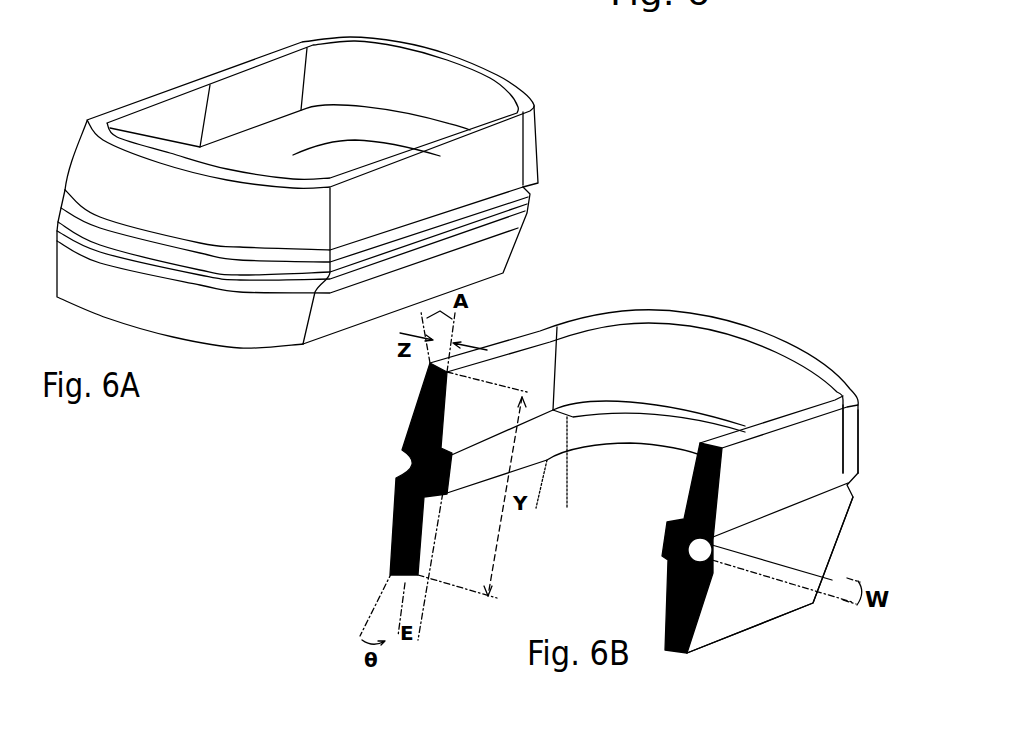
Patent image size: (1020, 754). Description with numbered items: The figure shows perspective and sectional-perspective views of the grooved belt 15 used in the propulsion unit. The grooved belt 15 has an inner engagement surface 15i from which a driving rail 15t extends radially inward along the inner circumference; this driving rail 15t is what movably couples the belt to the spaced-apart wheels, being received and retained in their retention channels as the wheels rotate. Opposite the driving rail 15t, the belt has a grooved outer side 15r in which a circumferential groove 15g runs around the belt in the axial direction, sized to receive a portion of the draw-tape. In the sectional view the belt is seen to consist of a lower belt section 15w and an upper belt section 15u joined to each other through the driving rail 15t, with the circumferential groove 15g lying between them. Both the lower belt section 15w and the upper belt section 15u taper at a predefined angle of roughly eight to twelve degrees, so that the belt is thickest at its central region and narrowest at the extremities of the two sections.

In FIG. 6B, the grooved belt 15 is at (520, 238).
In FIG. 6A, the inner engagement surface 15i is at (253, 90).
In FIG. 6B, the inner engagement surface 15i is at (782, 367).
In FIG. 6A, the driving rail 15t is at (407, 133).
In FIG. 6B, the driving rail 15t is at (550, 440).
In FIG. 6A, the grooved outer side 15r is at (85, 170).
In FIG. 6A, the circumferential groove 15g is at (211, 268).
In FIG. 6B, the circumferential groove 15g is at (404, 462).
In FIG. 6B, the upper belt section 15u is at (833, 430).
In FIG. 6B, the lower belt section 15w is at (753, 610).